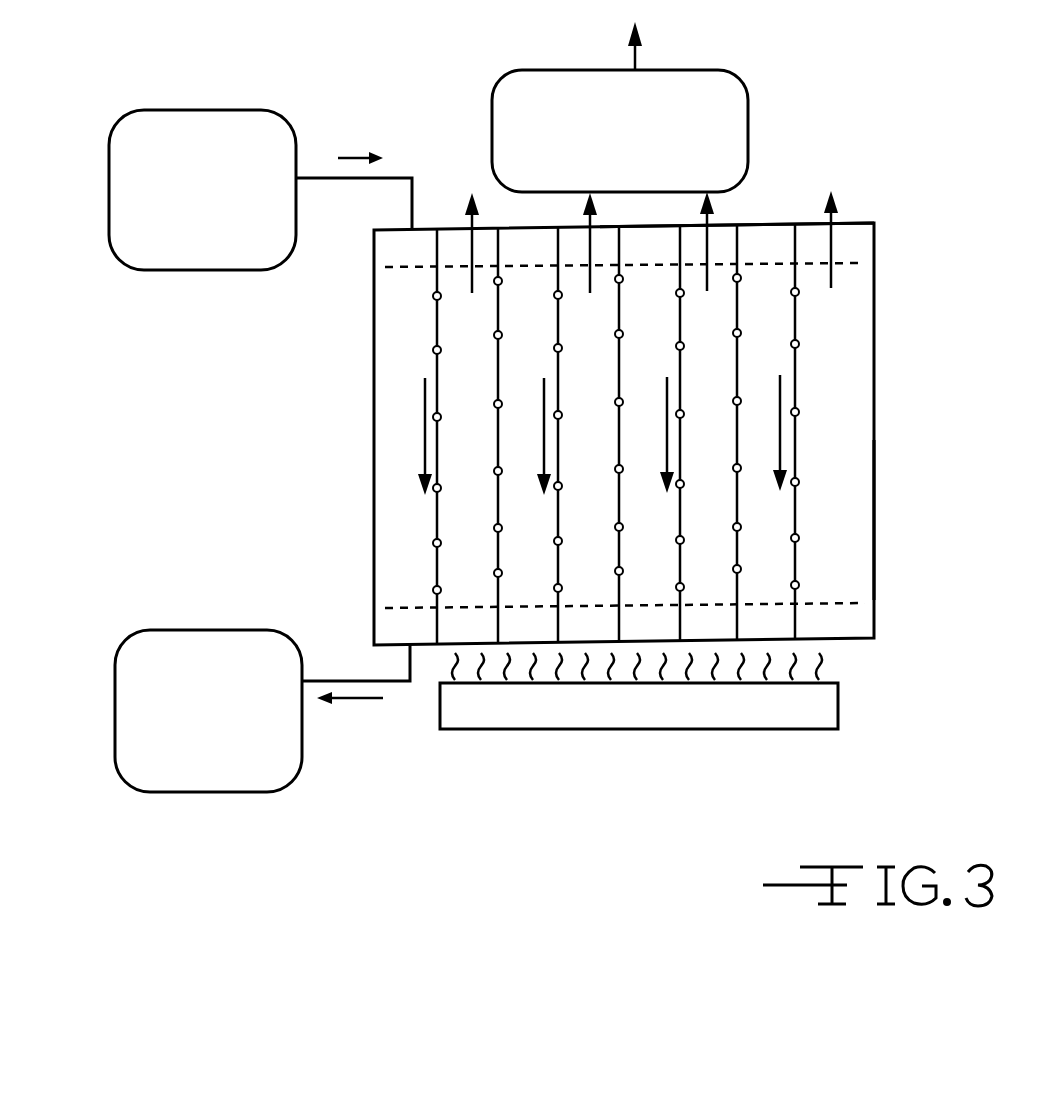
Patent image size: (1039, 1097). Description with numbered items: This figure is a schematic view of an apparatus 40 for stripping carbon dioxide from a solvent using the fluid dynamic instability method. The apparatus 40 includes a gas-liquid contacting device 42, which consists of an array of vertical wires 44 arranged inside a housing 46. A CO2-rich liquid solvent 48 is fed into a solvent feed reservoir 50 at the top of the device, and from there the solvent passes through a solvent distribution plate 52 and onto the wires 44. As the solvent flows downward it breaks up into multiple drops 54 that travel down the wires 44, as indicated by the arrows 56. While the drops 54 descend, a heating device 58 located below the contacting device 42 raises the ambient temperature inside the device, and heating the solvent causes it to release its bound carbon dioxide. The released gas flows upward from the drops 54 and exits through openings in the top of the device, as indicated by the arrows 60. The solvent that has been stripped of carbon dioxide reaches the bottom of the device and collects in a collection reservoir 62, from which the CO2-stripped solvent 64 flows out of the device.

The apparatus 40 is at (950, 108).
The gas-liquid contacting device 42 is at (895, 349).
The vertical wires 44 is at (740, 543).
The housing 46 is at (875, 532).
The CO2-rich liquid solvent 48 is at (109, 192).
The solvent feed reservoir 50 is at (845, 237).
The solvent distribution plate 52 is at (860, 263).
The drops 54 is at (558, 347).
The arrows 56 is at (542, 430).
The heating device 58 is at (605, 729).
The arrows 60 is at (460, 222).
The collection reservoir 62 is at (863, 618).
The CO2-stripped solvent 64 is at (115, 702).